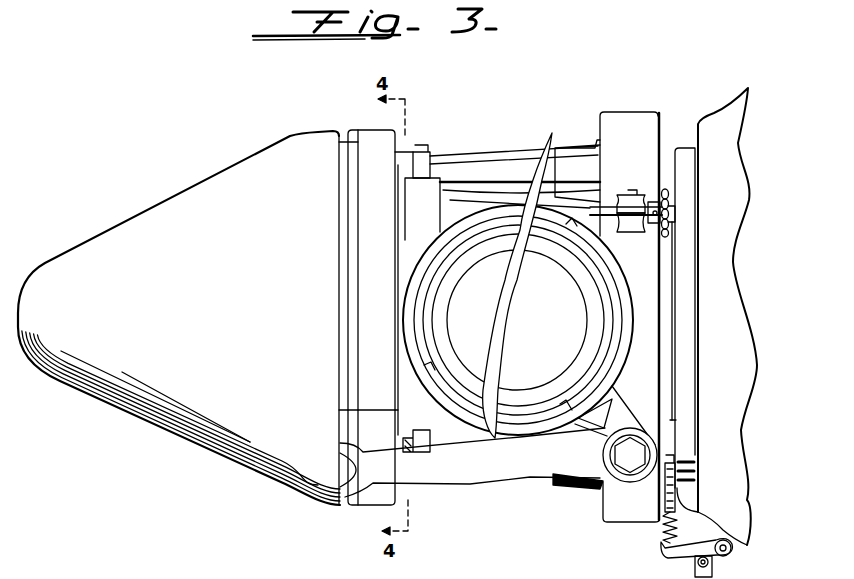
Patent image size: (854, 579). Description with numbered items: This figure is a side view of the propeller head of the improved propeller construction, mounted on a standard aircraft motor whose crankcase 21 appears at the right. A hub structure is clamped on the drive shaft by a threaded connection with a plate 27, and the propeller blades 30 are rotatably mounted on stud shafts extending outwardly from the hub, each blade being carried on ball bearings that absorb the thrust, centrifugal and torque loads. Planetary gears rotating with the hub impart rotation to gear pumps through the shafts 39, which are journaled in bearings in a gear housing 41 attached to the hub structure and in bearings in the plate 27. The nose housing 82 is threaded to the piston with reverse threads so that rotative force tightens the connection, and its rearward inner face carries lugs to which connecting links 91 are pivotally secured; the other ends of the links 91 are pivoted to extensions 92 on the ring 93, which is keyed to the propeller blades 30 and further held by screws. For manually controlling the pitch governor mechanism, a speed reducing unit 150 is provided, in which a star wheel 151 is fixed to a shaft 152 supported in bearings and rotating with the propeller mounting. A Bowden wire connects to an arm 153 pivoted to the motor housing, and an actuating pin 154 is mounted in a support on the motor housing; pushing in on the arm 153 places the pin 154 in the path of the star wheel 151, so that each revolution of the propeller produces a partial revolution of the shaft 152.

The nose housing 82 is at (221, 455).
The speed reducing unit 150 is at (408, 227).
The plate 27 is at (383, 498).
The connecting links 91 is at (470, 158).
The shafts 39 is at (518, 169).
The gear housing 41 is at (626, 122).
The shaft 152 is at (607, 207).
The star wheel 151 is at (669, 196).
The ring 93 is at (628, 301).
The propeller blades 30 is at (507, 351).
The extensions 92 is at (637, 427).
The actuating pin 154 is at (672, 458).
The crankcase 21 is at (744, 498).
The arm 153 is at (676, 558).